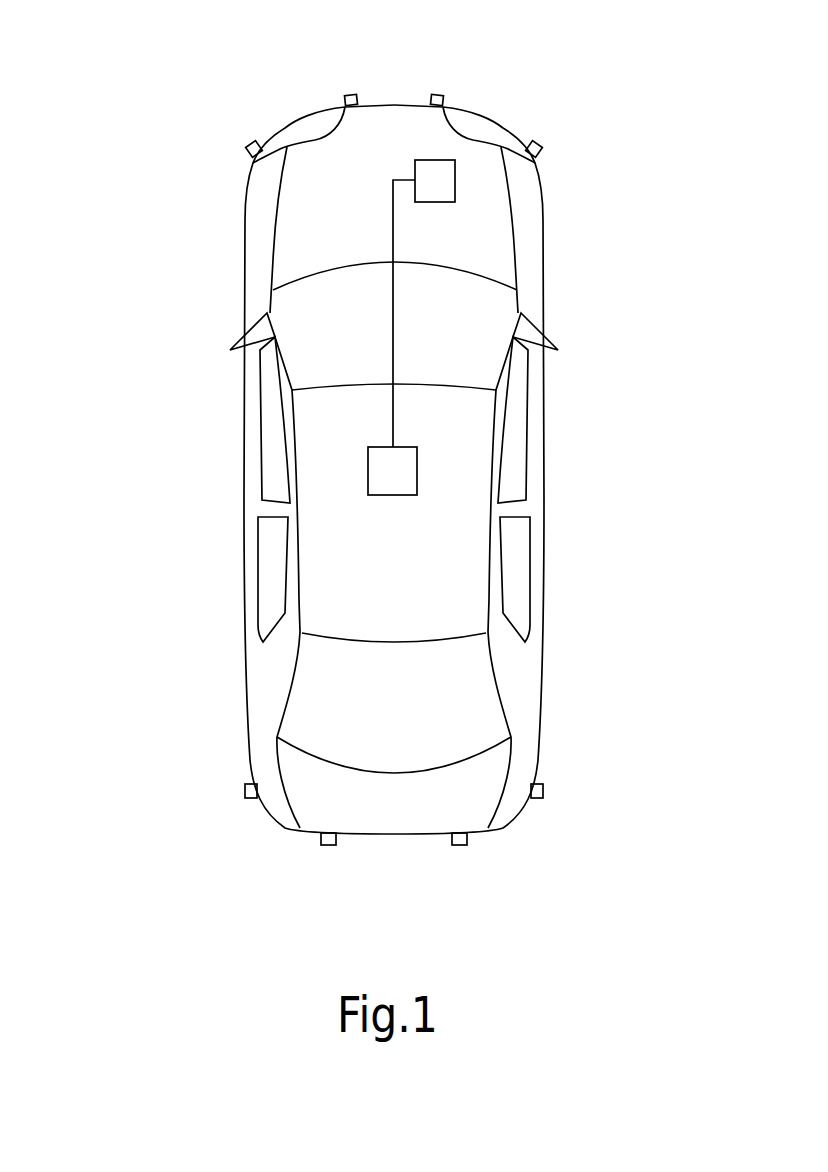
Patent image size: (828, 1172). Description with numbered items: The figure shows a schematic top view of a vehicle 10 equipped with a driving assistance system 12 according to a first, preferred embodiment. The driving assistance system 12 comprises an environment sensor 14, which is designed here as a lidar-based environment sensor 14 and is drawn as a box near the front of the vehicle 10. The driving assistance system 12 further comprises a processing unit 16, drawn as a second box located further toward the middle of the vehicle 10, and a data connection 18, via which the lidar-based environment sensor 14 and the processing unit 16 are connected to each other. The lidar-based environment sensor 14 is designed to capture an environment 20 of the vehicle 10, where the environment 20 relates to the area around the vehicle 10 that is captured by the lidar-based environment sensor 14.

The vehicle 10 is at (371, 422).
The driving assistance system 12 is at (177, 309).
The environment sensor 14 is at (455, 183).
The processing unit 16 is at (417, 463).
The data connection 18 is at (393, 293).
The environment 20 is at (625, 517).